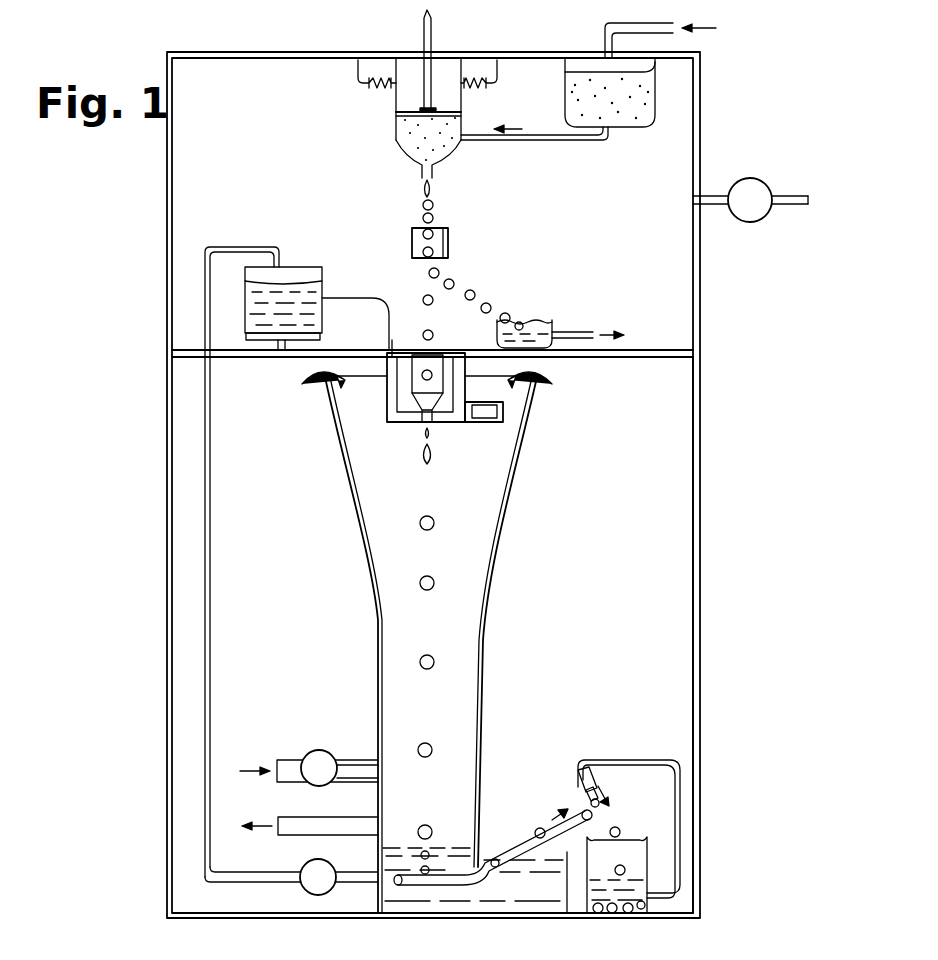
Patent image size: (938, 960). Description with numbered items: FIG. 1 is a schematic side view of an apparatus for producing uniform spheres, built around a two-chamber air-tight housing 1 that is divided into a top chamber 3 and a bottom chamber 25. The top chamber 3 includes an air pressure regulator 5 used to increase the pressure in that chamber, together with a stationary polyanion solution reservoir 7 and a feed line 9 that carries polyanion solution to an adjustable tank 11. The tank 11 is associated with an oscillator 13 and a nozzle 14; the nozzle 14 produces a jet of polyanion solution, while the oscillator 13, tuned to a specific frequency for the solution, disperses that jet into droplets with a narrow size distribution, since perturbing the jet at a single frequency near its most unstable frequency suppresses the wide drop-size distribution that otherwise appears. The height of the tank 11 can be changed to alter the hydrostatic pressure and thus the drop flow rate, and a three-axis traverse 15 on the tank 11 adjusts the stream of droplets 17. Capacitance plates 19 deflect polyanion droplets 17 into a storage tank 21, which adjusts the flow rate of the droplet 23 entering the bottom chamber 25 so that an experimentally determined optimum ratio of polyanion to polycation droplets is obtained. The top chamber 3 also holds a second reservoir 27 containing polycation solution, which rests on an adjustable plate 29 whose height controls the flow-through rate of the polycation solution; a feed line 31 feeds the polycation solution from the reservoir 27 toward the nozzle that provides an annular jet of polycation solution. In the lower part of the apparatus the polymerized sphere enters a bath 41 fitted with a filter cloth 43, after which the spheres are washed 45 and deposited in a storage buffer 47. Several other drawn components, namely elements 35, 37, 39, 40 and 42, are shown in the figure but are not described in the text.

The two-chamber air-tight housing 1 is at (700, 116).
The top chamber 3 is at (700, 293).
The air pressure regulator 5 is at (757, 222).
The polyanion solution reservoir 7 is at (655, 90).
The feed line 9 is at (575, 140).
The adjustable tank 11 is at (423, 168).
The oscillator 13 is at (358, 72).
The nozzle 14 is at (398, 132).
The 3 axis traverse 15 is at (432, 28).
The polyanion droplets 17 is at (423, 205).
The capacitance plates 19 is at (412, 238).
The storage tank 21 is at (540, 320).
The droplet 23 is at (423, 318).
The bottom chamber 25 is at (700, 600).
The second reservoir 27 is at (243, 300).
The adjustable plate 29 is at (262, 340).
The feed line 31 is at (350, 295).
The side chamber 35 is at (500, 412).
The falling drop 37 is at (416, 452).
The guide funnel 39 is at (385, 610).
The upper pump 40 is at (302, 782).
The bath 41 is at (425, 918).
The lower pump 42 is at (307, 837).
The filter cloth 43 is at (512, 876).
The washing 45 is at (577, 783).
The storage buffer 47 is at (637, 900).